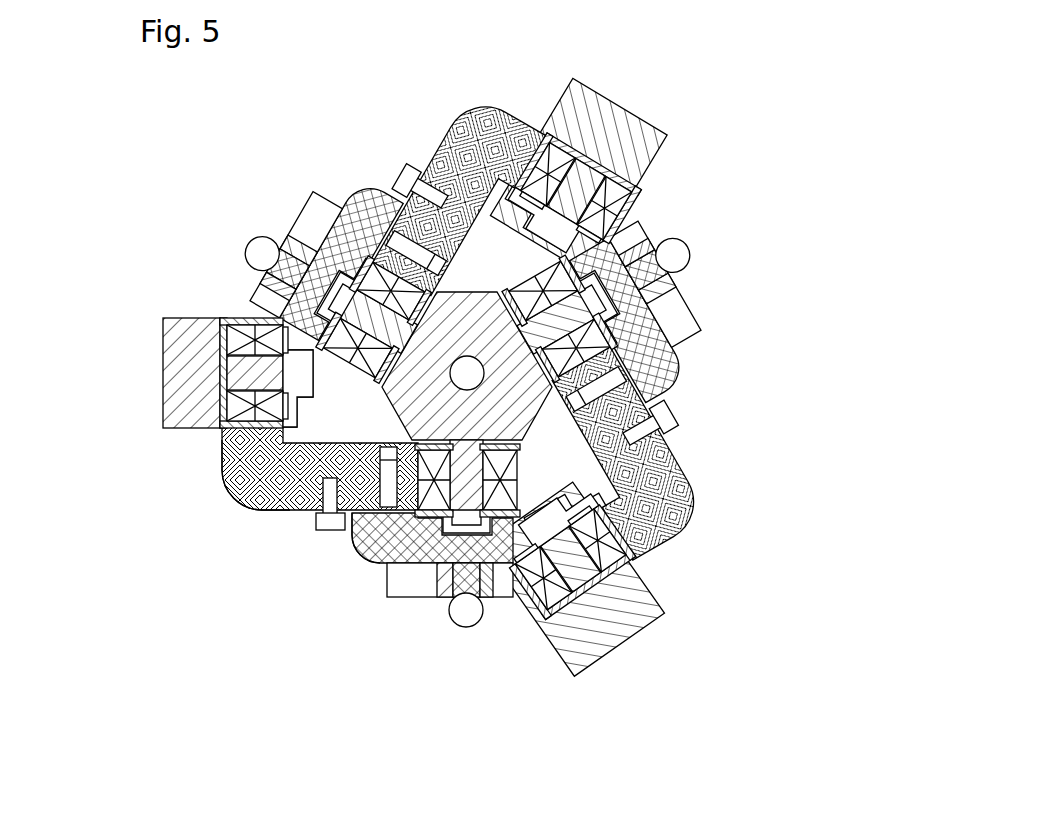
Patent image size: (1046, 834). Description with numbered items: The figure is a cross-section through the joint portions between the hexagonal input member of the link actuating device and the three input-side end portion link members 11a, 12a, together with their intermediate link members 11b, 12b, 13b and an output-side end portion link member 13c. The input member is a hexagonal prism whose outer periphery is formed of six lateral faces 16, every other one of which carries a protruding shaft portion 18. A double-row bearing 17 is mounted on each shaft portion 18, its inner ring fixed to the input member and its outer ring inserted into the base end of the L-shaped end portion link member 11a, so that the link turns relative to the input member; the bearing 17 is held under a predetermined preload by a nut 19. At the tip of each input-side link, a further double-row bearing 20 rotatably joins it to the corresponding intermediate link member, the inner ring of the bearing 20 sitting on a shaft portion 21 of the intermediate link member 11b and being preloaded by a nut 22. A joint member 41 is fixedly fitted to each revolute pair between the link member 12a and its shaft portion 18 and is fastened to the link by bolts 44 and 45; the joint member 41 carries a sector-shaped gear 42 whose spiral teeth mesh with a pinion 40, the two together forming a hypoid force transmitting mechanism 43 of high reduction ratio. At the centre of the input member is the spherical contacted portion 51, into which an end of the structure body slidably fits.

The end portion link member on the input side 11a is at (270, 515).
The intermediate link member 11b is at (163, 370).
The end portion link member on the input side 12a is at (677, 510).
The intermediate link member 12b is at (620, 643).
The intermediate link member 13b is at (613, 103).
The end portion link member on the output side 13c is at (477, 120).
The lateral face 16 is at (400, 418).
The double-row bearing 17 is at (358, 540).
The shaft portion 18 is at (498, 573).
The nut 19 is at (430, 575).
The double-row bearing 20 is at (245, 452).
The shaft portion 21 is at (253, 368).
The nut 22 is at (247, 493).
The pinion 40 is at (466, 627).
The joint member 41 is at (370, 535).
The sector-shaped gear 42 is at (445, 598).
The force transmitting mechanism 43 is at (459, 705).
The bolt 44 is at (385, 505).
The bolt 45 is at (325, 527).
The spherical contacted portion 51 is at (477, 378).